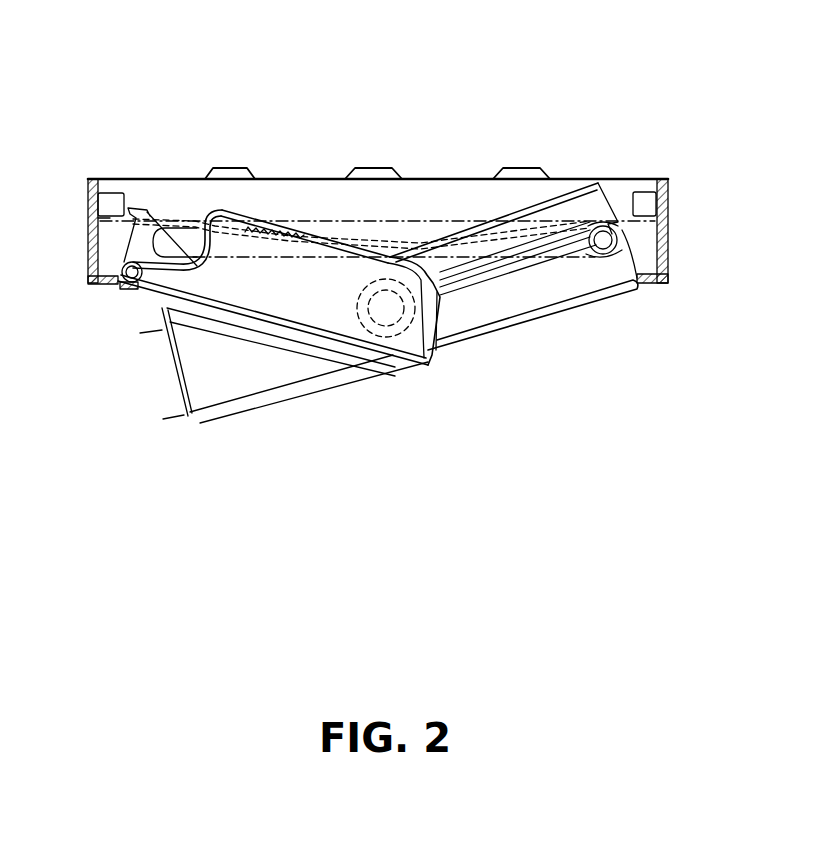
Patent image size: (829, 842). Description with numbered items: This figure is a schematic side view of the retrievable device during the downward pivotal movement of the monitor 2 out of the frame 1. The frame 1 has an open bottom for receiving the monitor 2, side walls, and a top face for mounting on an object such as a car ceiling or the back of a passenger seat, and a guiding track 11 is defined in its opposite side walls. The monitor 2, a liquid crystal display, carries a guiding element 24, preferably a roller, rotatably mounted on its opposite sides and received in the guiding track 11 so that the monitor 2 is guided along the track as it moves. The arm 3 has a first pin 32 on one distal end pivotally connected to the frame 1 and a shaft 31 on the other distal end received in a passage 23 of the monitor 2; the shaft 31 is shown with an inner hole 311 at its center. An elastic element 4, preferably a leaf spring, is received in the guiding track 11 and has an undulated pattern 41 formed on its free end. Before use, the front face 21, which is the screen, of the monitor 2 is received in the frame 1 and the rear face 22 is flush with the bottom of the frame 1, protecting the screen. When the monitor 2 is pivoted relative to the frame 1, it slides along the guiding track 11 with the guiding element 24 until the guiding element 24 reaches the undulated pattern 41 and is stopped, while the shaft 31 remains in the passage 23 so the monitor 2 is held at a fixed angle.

The frame 1 is at (676, 208).
The monitor 2 is at (520, 285).
The arm 3 is at (318, 282).
The elastic element 4 is at (231, 175).
The guiding track 11 is at (594, 284).
The front face 21 is at (566, 190).
The rear face 22 is at (465, 342).
The passage 23 is at (213, 352).
The guiding element 24 is at (607, 258).
The shaft 31 is at (395, 278).
The first pin 32 is at (120, 290).
The undulated pattern 41 is at (267, 228).
The inner hole 311 is at (386, 310).